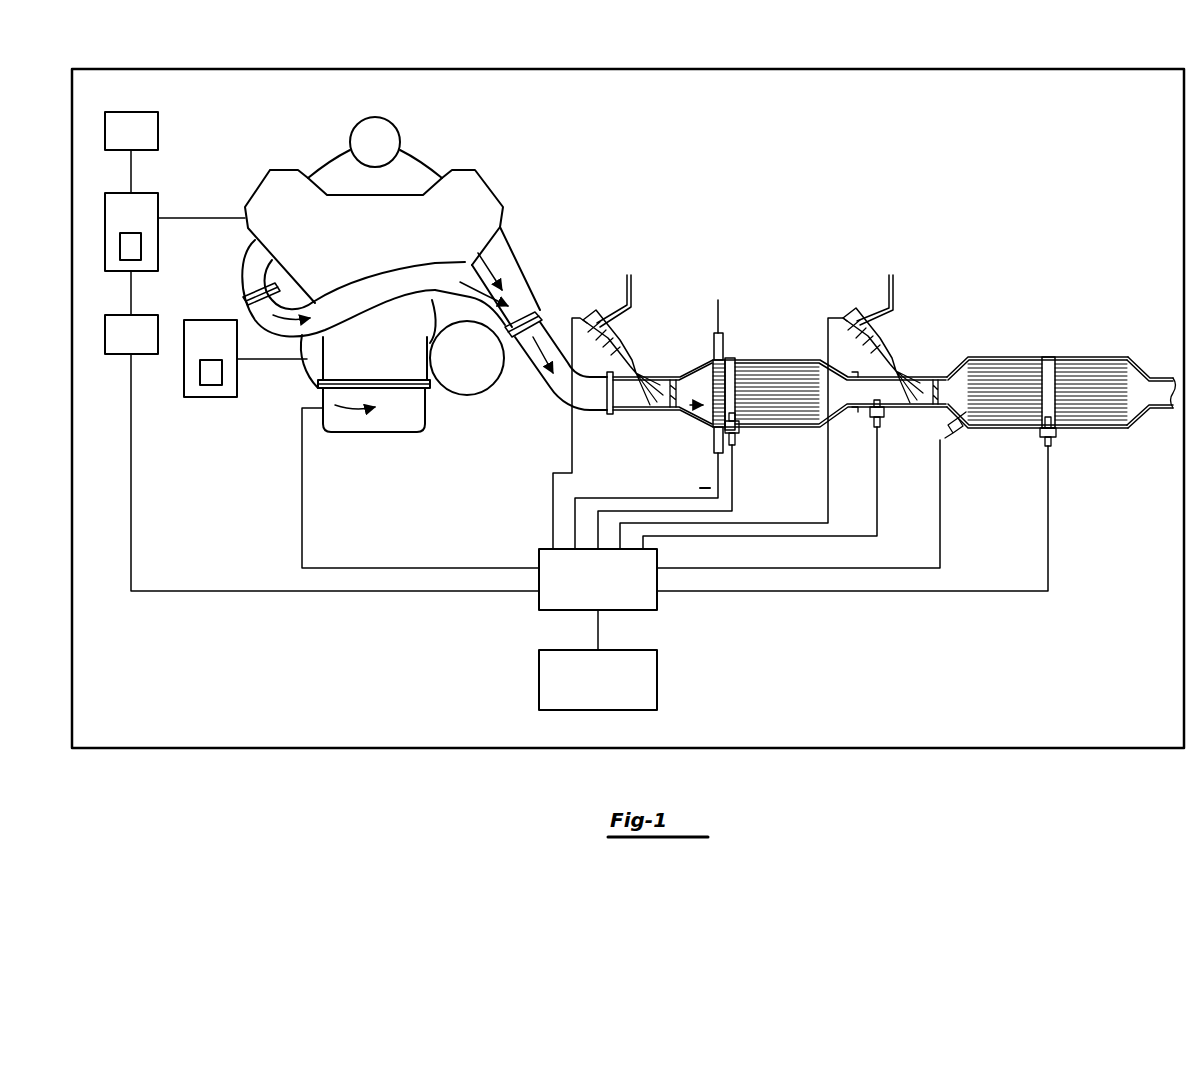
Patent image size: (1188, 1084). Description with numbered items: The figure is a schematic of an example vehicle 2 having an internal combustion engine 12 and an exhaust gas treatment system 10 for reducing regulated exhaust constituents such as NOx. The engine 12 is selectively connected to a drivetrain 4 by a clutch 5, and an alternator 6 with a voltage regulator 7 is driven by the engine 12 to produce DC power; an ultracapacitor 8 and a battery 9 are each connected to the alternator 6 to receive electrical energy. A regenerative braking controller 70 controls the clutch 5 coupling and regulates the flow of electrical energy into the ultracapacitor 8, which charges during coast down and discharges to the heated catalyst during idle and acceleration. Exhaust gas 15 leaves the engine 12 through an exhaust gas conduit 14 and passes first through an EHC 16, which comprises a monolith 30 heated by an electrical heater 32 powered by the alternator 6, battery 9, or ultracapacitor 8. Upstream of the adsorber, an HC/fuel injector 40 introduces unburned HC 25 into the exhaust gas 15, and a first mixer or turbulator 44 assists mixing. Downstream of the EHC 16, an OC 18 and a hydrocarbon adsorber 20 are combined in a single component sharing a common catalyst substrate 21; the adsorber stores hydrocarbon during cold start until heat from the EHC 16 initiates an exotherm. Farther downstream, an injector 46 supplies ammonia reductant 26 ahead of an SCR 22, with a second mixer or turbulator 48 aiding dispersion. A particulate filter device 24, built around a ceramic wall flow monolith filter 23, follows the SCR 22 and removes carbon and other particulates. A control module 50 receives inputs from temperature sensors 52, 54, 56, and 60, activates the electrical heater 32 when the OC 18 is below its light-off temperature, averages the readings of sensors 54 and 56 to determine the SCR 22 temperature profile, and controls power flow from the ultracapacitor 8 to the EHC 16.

The vehicle 2 is at (935, 58).
The drivetrain 4 is at (219, 348).
The clutch 5 is at (200, 373).
The alternator 6 is at (140, 221).
The voltage regulator 7 is at (120, 248).
The ultracapacitor 8 is at (140, 342).
The battery 9 is at (140, 140).
The exhaust gas treatment system 10 is at (803, 620).
The internal combustion engine 12 is at (463, 165).
The exhaust gas conduit 14 is at (513, 275).
The exhaust gas 15 is at (545, 350).
The electrically heated catalyst (EHC) 16 is at (696, 408).
The oxidation catalyst (OC) 18 is at (743, 360).
The hydrocarbon adsorber 20 is at (812, 360).
The catalyst substrate 21 is at (789, 382).
The SCR 22 is at (1005, 378).
The ceramic wall flow monolith filter 23 is at (1127, 382).
The particulate filter (PF) device 24 is at (1092, 378).
The unburned HC 25 is at (652, 382).
The ammonia reductant 26 is at (913, 382).
The monolith 30 is at (710, 410).
The electrical heater 32 is at (732, 455).
The HC/fuel injector 40 is at (628, 347).
The first mixer or turbulator 44 is at (668, 403).
The injector 46 is at (892, 350).
The second mixer or turbulator 48 is at (933, 405).
The control module 50 is at (610, 590).
The temperature sensor 52 is at (870, 420).
The temperature sensor 54 is at (953, 432).
The temperature sensor 56 is at (1057, 445).
The temperature sensor 60 is at (736, 437).
The regenerative braking controller 70 is at (610, 690).